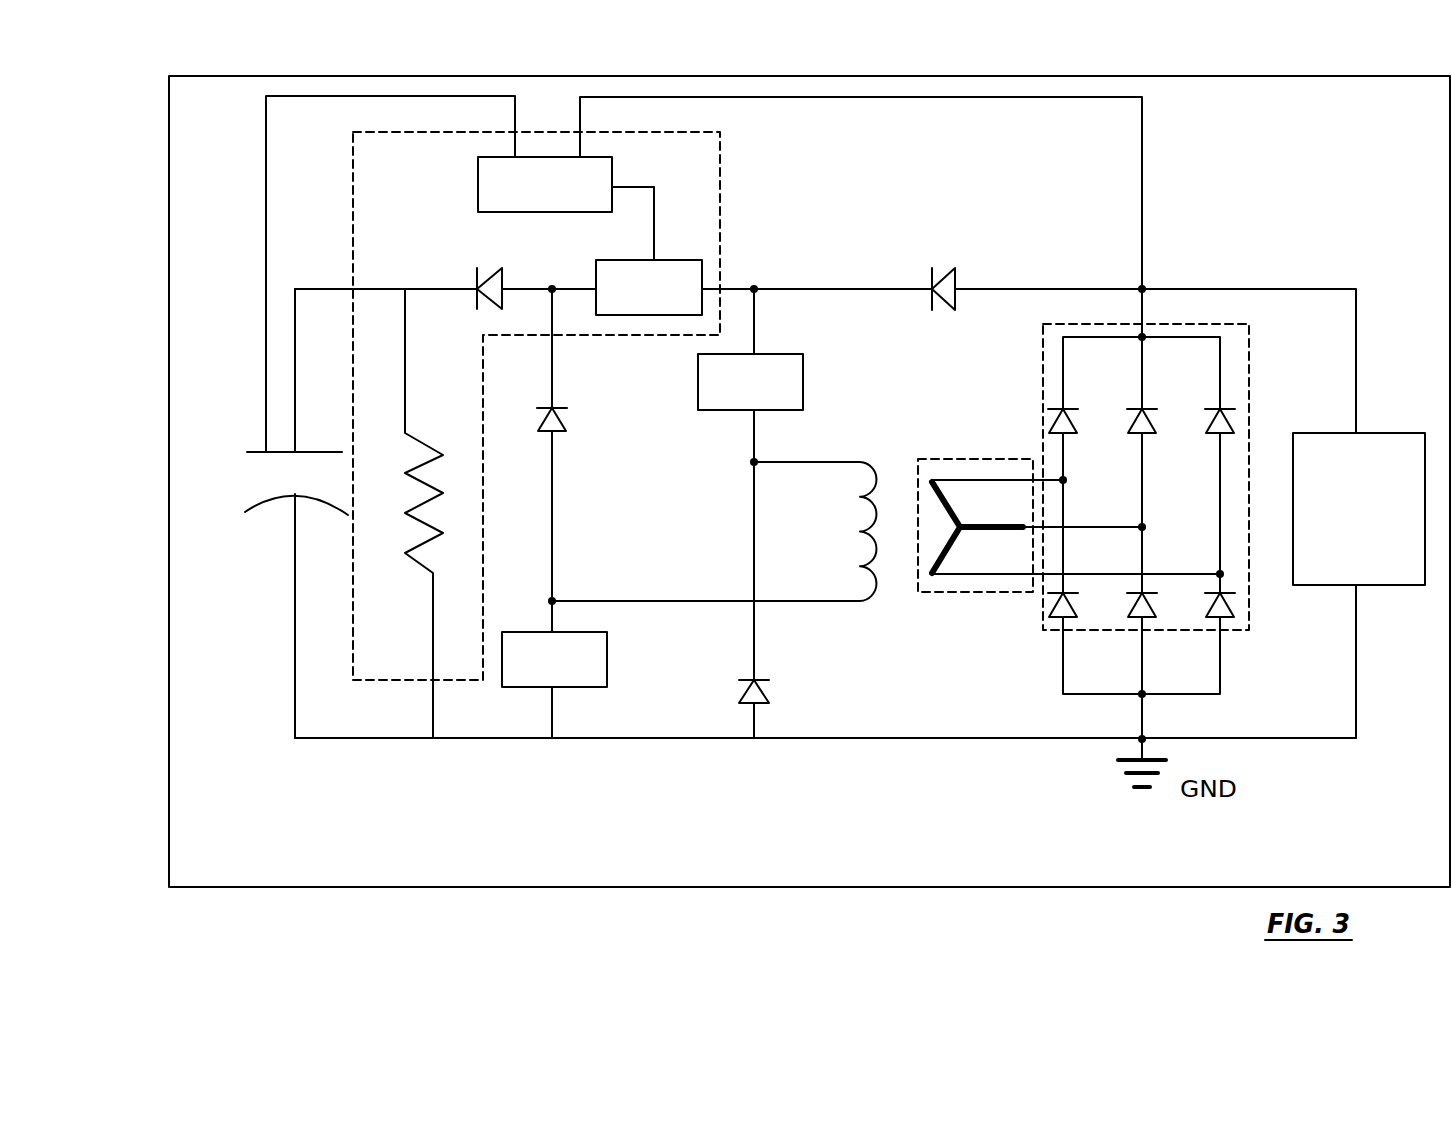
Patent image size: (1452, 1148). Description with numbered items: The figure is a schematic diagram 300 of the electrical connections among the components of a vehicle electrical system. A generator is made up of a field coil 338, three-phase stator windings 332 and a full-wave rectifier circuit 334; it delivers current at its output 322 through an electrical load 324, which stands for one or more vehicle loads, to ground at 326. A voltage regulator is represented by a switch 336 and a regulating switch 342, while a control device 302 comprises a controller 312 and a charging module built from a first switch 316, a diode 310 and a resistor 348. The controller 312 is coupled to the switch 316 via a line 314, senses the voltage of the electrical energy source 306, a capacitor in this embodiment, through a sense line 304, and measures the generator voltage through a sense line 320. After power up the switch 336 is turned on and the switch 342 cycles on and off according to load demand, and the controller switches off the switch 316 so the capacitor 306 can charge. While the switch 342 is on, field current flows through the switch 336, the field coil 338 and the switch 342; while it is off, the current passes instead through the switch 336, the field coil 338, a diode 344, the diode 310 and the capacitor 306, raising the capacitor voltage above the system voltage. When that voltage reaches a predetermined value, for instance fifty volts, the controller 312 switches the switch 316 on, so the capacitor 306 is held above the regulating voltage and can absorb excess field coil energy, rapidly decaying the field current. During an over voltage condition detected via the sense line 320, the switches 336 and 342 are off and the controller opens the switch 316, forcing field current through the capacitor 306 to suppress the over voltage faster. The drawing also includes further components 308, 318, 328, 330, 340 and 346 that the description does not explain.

The schematic diagram 300 is at (163, 146).
The control device 302 is at (353, 258).
The sense line 304 is at (266, 353).
The electrical energy source 306 is at (278, 492).
The conductor 308 is at (375, 289).
The diode 310 is at (503, 268).
The controller 312 is at (612, 170).
The line 314 is at (657, 227).
The first switch 316 is at (702, 267).
The diode 318 is at (957, 268).
The sense line 320 is at (1142, 188).
The output 322 is at (1223, 289).
The electrical load 324 is at (1368, 432).
The ground 326 is at (1353, 710).
The lower rectifier diode 328 is at (1068, 617).
The upper rectifier diode 330 is at (1065, 435).
The three-phase stator windings 332 is at (955, 592).
The full-wave rectifier circuit 334 is at (1042, 362).
The switch 336 is at (803, 383).
The field coil 338 is at (872, 475).
The diode 340 is at (737, 702).
The switch 342 is at (607, 665).
The diode 344 is at (567, 430).
The conductor 346 is at (567, 288).
The resistor 348 is at (405, 553).